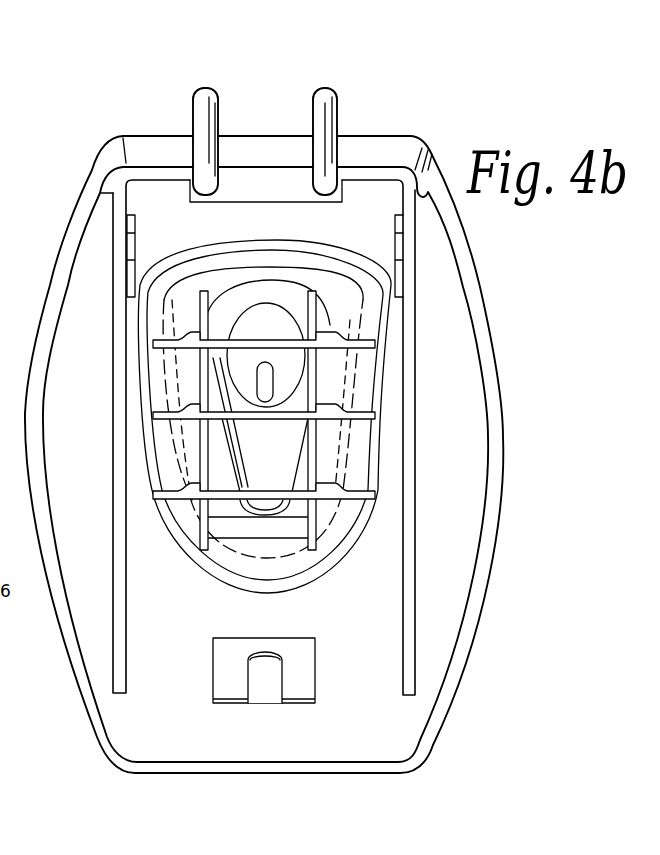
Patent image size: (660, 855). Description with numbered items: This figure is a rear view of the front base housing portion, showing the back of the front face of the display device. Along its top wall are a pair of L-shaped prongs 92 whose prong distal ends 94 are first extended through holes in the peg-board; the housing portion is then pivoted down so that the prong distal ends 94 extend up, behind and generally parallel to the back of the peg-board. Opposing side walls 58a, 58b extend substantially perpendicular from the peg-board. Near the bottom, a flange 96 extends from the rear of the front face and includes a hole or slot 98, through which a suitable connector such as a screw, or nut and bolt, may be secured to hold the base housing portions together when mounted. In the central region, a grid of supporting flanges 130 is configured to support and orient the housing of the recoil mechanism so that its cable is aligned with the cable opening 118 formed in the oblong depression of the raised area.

The side wall 58a is at (413, 595).
The side wall 58b is at (117, 633).
The L-shaped prong 92 is at (223, 122).
The prong distal end 94 is at (202, 118).
The flange 96 is at (300, 683).
The slot 98 is at (278, 673).
The cable opening 118 is at (273, 380).
The supporting flanges 130 is at (317, 450).